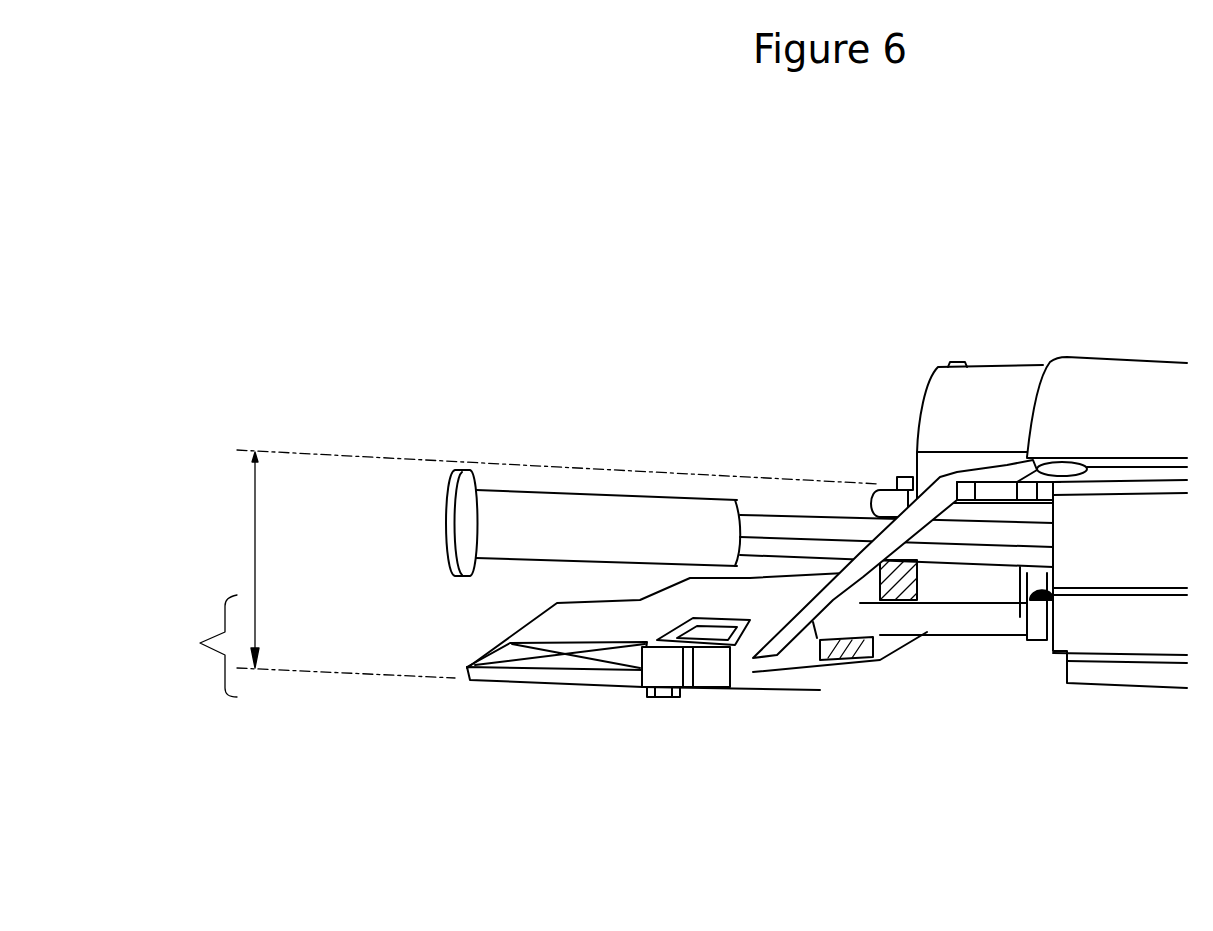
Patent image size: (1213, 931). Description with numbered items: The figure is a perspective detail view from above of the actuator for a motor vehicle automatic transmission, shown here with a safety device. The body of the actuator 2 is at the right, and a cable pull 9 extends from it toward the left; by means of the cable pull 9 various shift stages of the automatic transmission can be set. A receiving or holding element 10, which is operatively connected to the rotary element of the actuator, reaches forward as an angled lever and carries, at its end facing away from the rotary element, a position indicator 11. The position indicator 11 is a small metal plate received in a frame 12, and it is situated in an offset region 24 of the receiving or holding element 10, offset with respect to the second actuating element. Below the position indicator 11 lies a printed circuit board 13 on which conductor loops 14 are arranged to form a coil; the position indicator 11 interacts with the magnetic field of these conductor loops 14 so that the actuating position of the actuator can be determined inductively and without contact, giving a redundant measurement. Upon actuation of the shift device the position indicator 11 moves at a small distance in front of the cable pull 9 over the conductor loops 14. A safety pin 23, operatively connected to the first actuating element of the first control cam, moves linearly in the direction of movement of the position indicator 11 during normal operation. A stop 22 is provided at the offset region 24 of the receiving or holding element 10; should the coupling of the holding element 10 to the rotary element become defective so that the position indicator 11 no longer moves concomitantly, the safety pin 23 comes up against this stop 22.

The housing body 2 is at (1090, 400).
The cable pull 9 is at (790, 530).
The receiving or holding element 10 is at (925, 510).
The position indicator 11 is at (690, 642).
The frame 12 is at (697, 647).
The printed circuit board 13 is at (580, 627).
The conductor loops 14 is at (553, 637).
The stop 22 is at (813, 623).
The safety pin 23 is at (925, 618).
The offset region 24 is at (515, 573).